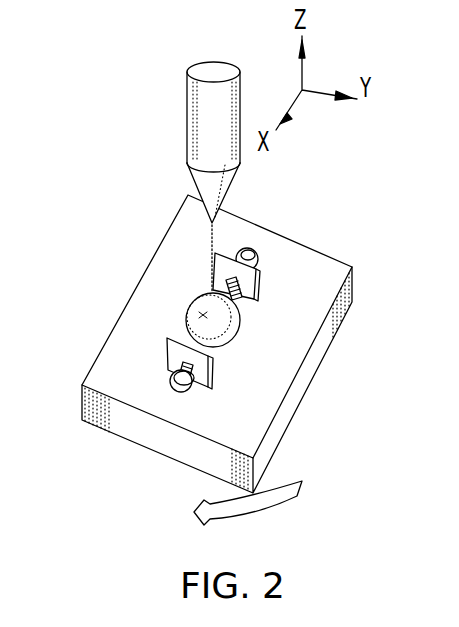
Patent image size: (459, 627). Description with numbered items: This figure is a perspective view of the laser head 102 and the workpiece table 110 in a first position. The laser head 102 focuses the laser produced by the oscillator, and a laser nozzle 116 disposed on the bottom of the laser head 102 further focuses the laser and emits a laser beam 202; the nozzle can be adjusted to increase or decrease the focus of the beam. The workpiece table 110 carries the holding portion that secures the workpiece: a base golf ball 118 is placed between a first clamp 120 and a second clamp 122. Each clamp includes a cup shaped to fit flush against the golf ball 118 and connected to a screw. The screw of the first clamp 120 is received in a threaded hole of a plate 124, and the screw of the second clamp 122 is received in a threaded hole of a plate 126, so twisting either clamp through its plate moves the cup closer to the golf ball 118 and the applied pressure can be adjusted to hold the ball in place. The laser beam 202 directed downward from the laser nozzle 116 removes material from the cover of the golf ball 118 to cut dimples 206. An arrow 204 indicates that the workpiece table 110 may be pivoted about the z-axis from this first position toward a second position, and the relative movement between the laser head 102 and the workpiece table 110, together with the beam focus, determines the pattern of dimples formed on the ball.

The laser head 102 is at (213, 142).
The workpiece table 110 is at (180, 228).
The laser nozzle 116 is at (232, 187).
The base golf ball 118 is at (187, 320).
The first clamp 120 is at (215, 354).
The second clamp 122 is at (256, 298).
The plate 124 is at (216, 376).
The plate 126 is at (263, 280).
The laser beam 202 is at (220, 236).
The arrow 204 is at (298, 503).
The dimples 206 is at (203, 315).